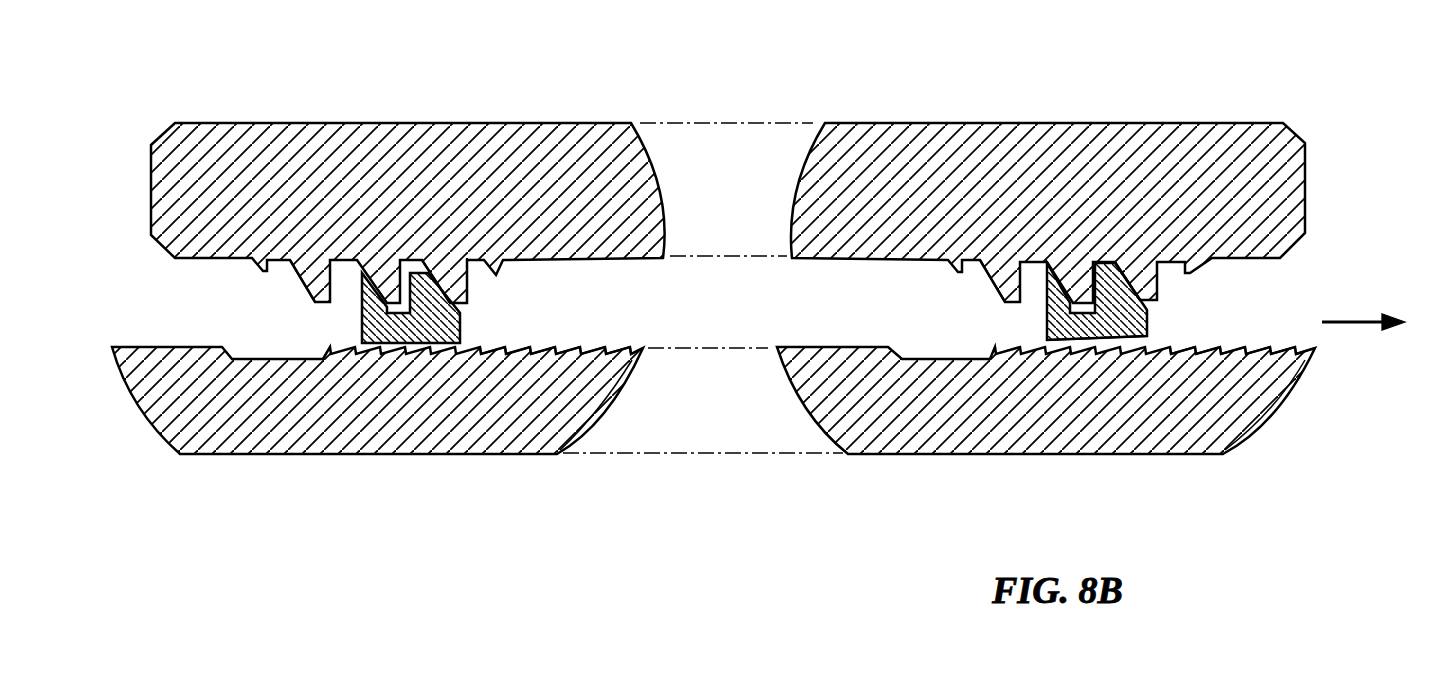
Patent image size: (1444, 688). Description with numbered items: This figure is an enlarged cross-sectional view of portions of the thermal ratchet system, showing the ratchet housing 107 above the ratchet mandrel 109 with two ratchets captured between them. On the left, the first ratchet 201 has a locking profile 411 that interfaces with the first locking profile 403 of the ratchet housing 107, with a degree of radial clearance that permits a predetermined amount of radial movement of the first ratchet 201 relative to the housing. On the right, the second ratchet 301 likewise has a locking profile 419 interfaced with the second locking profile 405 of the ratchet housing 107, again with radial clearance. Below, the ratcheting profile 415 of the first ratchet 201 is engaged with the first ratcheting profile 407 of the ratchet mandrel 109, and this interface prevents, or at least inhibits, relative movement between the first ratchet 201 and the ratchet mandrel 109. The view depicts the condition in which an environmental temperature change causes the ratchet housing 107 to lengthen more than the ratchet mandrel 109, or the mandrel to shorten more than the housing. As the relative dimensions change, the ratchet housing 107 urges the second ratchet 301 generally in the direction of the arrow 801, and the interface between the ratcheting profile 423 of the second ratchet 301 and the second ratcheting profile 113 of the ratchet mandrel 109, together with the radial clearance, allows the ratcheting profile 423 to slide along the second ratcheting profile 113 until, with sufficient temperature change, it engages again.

The ratchet housing 107 is at (367, 116).
The ratchet mandrel 109 is at (330, 465).
The first ratchet 201 is at (350, 318).
The second ratchet 301 is at (1035, 335).
The first locking profile 403 is at (303, 281).
The second locking profile 405 is at (1000, 282).
The locking profile 411 is at (450, 302).
The locking profile 419 is at (1150, 304).
The first ratcheting profile 407 is at (533, 347).
The second ratcheting profile 113 is at (1197, 348).
The ratcheting profile 415 is at (425, 350).
The ratcheting profile 423 is at (1088, 347).
The arrow 801 is at (1337, 322).